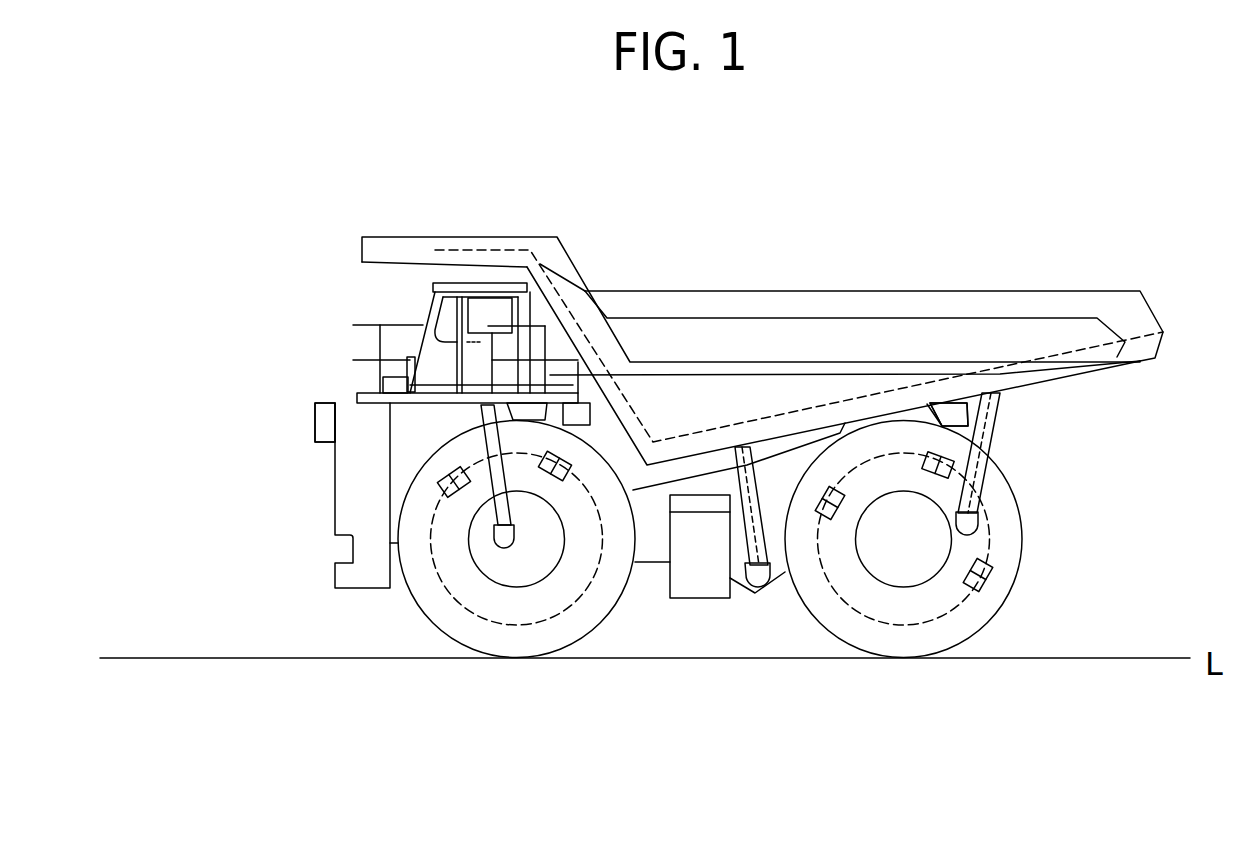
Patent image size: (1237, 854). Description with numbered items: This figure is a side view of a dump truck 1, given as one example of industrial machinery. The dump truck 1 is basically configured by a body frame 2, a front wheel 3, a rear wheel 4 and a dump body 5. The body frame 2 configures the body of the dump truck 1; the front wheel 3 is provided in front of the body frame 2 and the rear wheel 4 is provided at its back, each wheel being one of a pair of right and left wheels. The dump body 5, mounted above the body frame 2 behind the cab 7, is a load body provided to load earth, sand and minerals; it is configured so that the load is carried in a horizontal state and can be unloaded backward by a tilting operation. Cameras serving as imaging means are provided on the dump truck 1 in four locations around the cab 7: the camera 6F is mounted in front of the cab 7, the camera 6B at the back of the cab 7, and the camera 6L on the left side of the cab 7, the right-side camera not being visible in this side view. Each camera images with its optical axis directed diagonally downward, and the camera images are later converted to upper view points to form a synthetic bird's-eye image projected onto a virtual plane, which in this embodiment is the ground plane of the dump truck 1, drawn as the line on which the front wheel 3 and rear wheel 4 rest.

The dump truck 1 is at (702, 213).
The body frame 2 is at (652, 562).
The front wheel 3 is at (603, 622).
The rear wheel 4 is at (990, 622).
The dump body 5 is at (1000, 291).
The camera 6F is at (322, 443).
The camera 6L is at (579, 400).
The camera 6B is at (980, 420).
The cab 7 is at (437, 283).